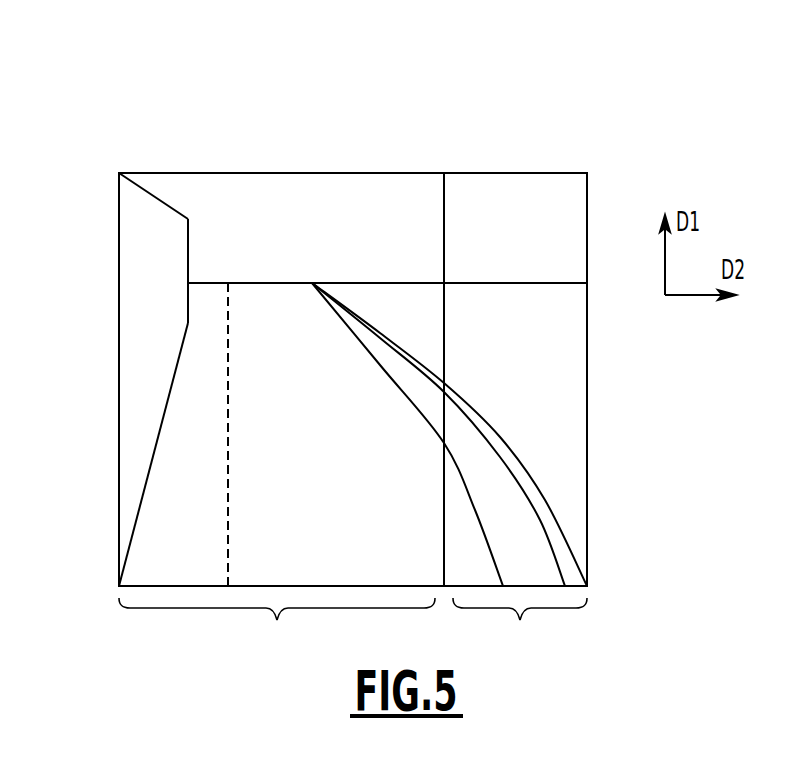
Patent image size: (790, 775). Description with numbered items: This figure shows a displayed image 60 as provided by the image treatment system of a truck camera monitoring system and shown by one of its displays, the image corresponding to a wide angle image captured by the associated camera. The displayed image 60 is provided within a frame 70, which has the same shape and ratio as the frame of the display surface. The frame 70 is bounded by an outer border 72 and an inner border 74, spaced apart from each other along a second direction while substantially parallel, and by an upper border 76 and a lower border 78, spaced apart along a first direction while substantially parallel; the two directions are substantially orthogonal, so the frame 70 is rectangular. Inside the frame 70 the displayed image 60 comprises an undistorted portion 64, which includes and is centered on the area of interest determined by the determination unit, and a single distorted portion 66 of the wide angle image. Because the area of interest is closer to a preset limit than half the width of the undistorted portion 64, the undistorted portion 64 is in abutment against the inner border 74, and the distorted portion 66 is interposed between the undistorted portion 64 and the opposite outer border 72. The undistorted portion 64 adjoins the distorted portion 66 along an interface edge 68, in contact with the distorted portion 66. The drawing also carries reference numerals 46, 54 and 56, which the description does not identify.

The displayed image 60 is at (159, 130).
The inclined leading face 56 is at (168, 205).
The front edge 46 is at (190, 248).
The upper border 76 is at (338, 172).
The frame 70 is at (414, 155).
The interface edge 68 is at (445, 315).
The outer border 72 is at (587, 395).
The inner border 74 is at (119, 342).
The inclined lower face 54 is at (166, 412).
The lower border 78 is at (363, 588).
The undistorted portion 64 is at (277, 628).
The distorted portion 66 is at (520, 629).